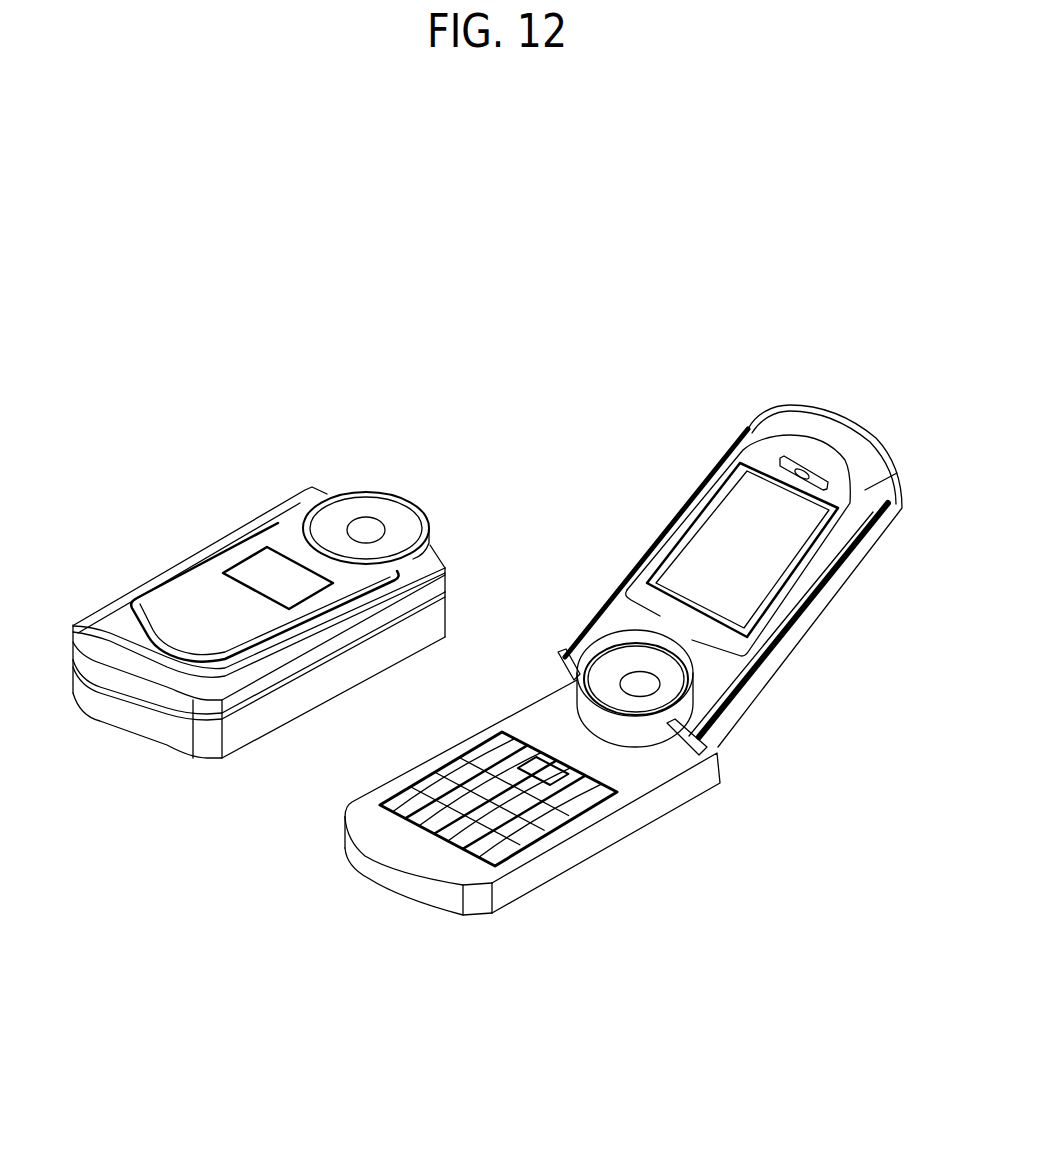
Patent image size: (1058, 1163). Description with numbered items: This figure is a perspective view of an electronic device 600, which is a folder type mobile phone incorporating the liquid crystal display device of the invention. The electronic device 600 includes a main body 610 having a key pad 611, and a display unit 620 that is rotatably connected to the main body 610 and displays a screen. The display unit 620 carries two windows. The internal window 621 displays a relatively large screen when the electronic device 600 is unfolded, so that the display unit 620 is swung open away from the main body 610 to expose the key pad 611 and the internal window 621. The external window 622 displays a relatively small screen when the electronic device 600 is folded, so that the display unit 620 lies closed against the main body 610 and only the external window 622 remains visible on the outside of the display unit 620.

The electronic device 600 is at (292, 338).
The main body 610 is at (192, 745).
The key pad 611 is at (402, 812).
The display unit 620 is at (820, 437).
The internal window 621 is at (713, 522).
The external window 622 is at (262, 558).